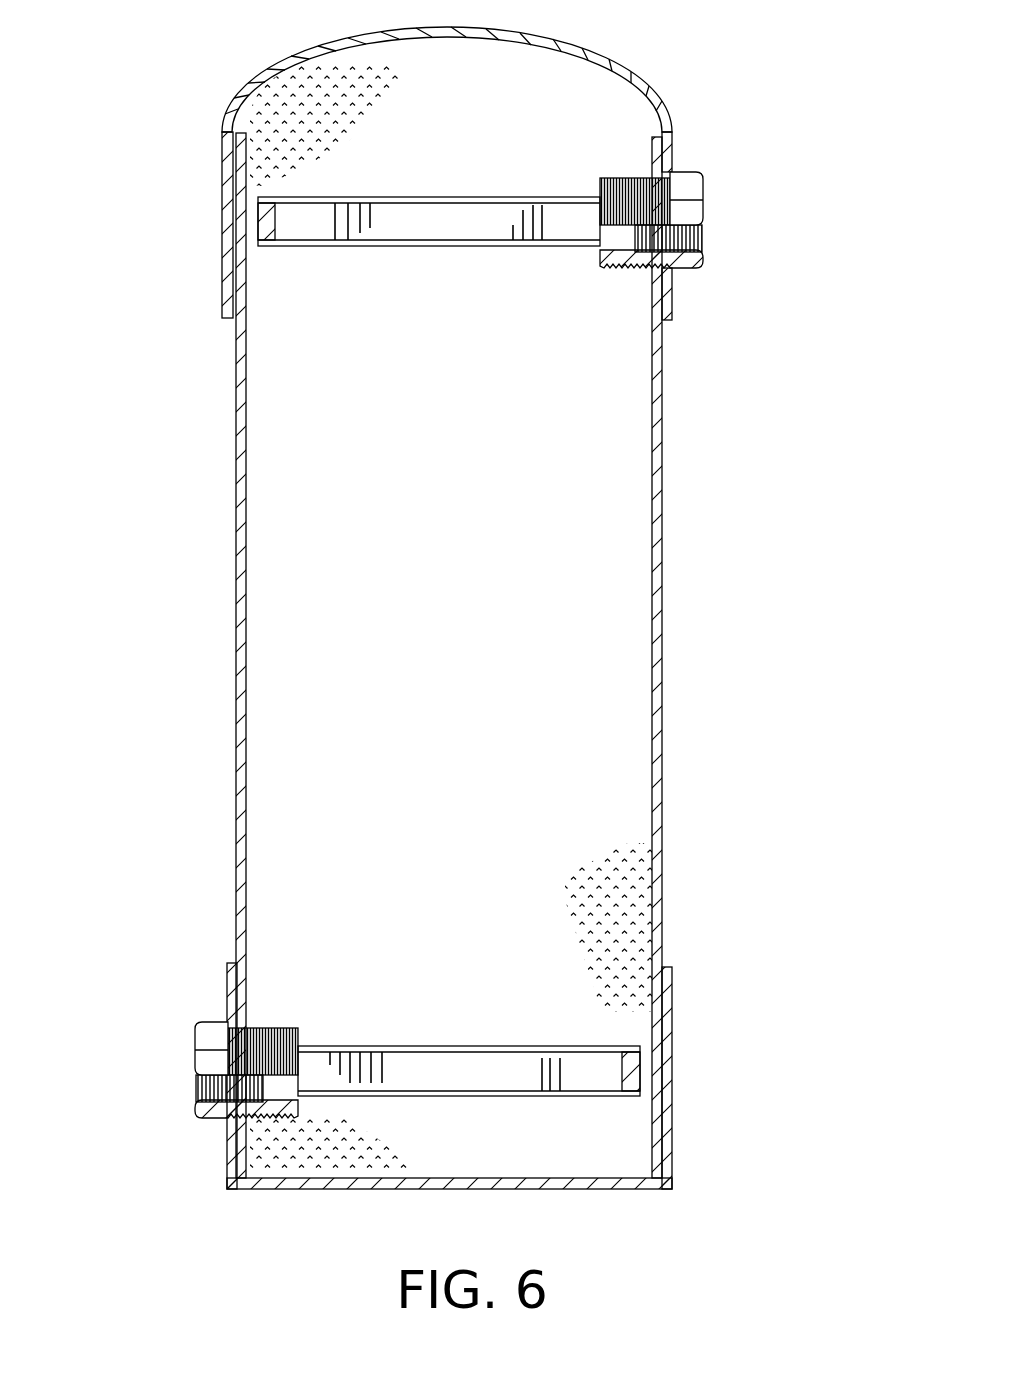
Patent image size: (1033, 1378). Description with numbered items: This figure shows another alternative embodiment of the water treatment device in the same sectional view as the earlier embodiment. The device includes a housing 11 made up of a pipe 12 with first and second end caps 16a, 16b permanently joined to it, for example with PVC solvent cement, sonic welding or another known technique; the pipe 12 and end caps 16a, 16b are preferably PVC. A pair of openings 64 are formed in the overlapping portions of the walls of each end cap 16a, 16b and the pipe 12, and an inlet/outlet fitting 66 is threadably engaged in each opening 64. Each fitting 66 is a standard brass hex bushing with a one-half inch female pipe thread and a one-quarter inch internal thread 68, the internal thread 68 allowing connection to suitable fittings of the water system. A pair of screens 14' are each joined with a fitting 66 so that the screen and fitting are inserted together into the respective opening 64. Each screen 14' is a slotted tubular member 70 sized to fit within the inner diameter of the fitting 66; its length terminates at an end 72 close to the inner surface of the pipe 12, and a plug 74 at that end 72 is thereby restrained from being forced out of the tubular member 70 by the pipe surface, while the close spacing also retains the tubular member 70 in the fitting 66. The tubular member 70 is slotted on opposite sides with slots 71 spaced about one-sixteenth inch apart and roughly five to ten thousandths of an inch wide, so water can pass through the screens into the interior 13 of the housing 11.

The housing 11 is at (510, 655).
The pipe 12 is at (662, 610).
The interior chamber 13 is at (422, 640).
The screen 14' is at (449, 600).
The first end cap 16a is at (673, 138).
The second end cap 16b is at (673, 1023).
The opening 64 is at (672, 177).
The inlet/outlet fitting 66 is at (707, 223).
The internal thread 68 is at (705, 245).
The slotted tubular member 70 is at (482, 195).
The slots 71 is at (352, 225).
The end 72 is at (272, 250).
The plug 74 is at (268, 216).